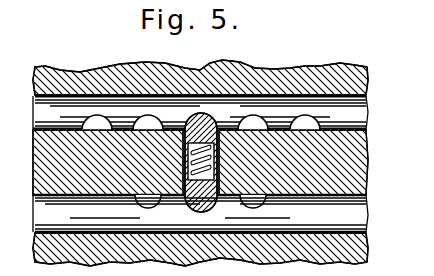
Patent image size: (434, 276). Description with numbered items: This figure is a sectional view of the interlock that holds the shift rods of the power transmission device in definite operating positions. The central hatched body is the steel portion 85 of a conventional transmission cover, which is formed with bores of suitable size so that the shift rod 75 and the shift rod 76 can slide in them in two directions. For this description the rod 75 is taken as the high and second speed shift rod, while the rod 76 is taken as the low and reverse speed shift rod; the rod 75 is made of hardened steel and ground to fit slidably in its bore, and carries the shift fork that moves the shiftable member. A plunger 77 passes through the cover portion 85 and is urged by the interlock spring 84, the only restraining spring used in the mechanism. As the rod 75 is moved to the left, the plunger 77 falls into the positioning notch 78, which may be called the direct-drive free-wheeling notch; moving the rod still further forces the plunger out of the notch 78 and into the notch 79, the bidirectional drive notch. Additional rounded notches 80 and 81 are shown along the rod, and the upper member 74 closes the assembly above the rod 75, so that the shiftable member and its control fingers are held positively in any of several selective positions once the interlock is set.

The upper plate 74 is at (356, 83).
The shift rod 75 is at (358, 110).
The shift rod 76 is at (360, 211).
The plunger 77 is at (215, 126).
The positioning notch 78 is at (254, 120).
The notch 79 is at (305, 118).
The projection 80 is at (149, 120).
The projection 81 is at (96, 120).
The interlock spring 84 is at (216, 128).
The portion of transmission cover 85 is at (352, 173).